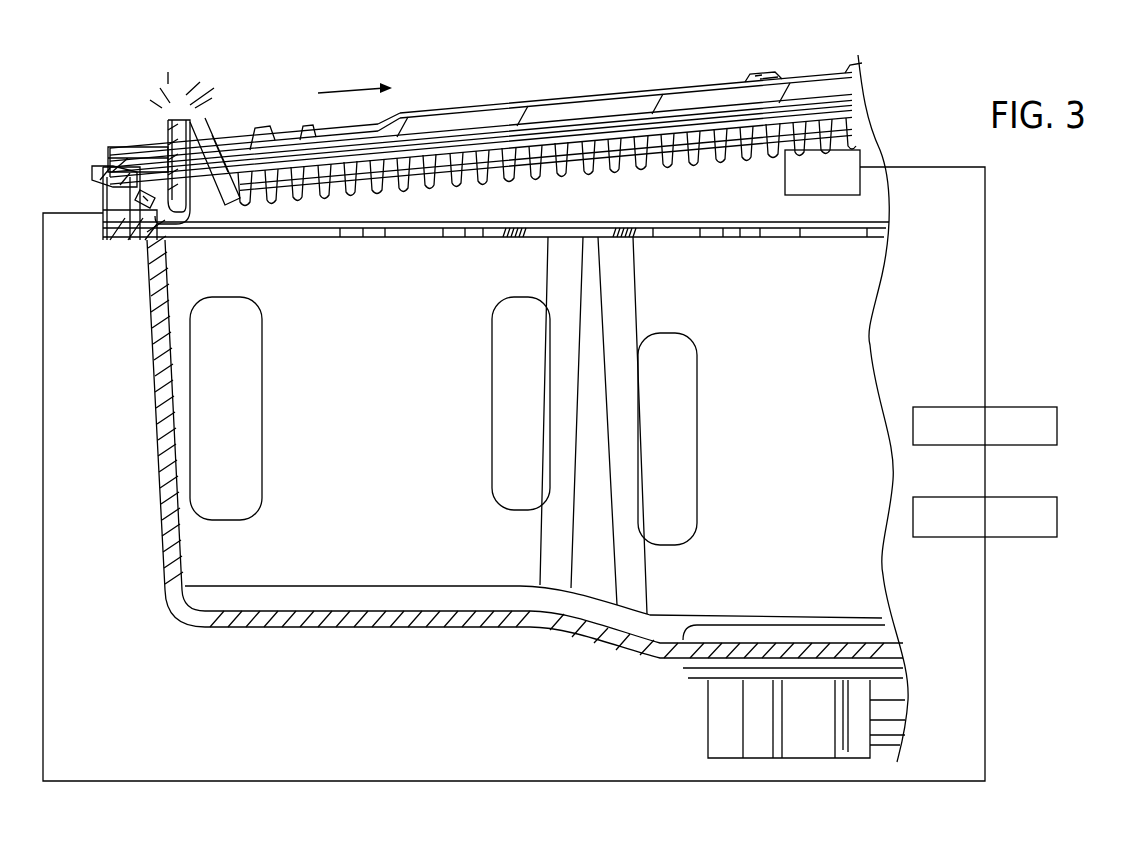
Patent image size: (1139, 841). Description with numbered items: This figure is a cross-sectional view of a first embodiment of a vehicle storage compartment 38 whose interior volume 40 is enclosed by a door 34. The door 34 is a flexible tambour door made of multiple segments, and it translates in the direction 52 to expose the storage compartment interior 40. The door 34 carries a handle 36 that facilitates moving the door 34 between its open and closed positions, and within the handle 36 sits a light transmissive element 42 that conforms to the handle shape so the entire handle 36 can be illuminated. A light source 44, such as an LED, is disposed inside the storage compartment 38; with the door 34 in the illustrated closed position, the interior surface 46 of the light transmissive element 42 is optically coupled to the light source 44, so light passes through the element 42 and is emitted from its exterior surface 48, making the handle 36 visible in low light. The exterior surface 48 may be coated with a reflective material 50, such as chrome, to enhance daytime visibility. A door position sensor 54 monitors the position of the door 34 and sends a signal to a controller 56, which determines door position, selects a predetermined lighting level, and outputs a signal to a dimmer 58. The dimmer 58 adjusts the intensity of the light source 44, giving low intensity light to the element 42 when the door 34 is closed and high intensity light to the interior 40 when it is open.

The door 34 is at (483, 148).
The handle 36 is at (200, 128).
The storage compartment 38 is at (574, 81).
The interior volume 40 is at (700, 211).
The light transmissive element 42 is at (180, 130).
The light source 44 is at (143, 207).
The interior surface 46 is at (138, 203).
The exterior surface 48 is at (163, 98).
The reflective material 50 is at (188, 102).
The direction 52 is at (350, 87).
The door position sensor 54 is at (822, 196).
The controller 56 is at (913, 422).
The dimmer 58 is at (1057, 518).